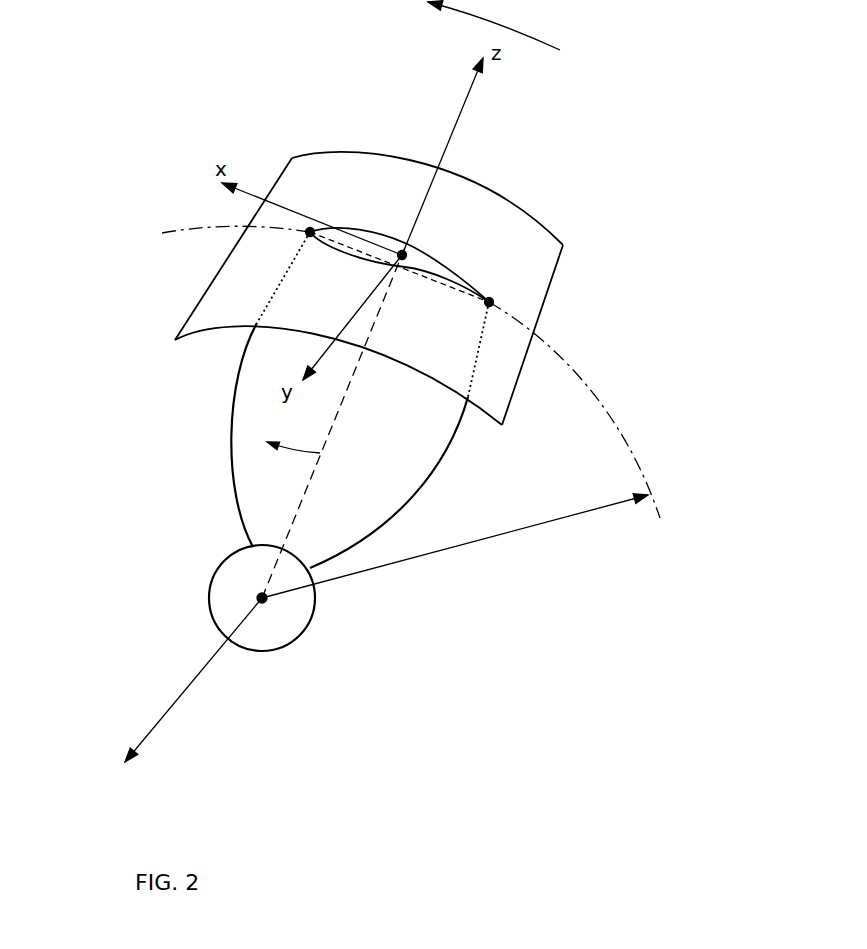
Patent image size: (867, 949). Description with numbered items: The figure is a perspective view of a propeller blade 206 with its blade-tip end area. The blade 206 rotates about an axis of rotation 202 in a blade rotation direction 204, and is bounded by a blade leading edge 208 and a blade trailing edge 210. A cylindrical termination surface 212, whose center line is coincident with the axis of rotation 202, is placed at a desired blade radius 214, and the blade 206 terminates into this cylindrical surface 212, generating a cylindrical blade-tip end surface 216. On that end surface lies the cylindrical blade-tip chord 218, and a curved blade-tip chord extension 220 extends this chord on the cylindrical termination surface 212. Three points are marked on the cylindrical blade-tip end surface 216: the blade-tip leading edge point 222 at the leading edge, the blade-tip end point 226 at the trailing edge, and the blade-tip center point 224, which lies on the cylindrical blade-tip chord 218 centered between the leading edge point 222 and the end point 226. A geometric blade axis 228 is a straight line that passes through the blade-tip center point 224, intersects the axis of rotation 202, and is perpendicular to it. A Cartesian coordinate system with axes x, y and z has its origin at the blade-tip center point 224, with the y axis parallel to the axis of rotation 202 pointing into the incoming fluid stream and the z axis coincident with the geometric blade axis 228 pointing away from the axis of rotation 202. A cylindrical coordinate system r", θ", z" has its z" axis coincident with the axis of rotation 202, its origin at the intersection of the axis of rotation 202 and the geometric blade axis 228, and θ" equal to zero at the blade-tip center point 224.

The axis of rotation 202 is at (192, 660).
The blade rotation direction 204 is at (494, 25).
The blade 206 is at (315, 400).
The blade leading edge 208 is at (240, 350).
The blade trailing edge 210 is at (455, 438).
The cylindrical termination surface 212 is at (352, 162).
The desired blade radius 214 is at (455, 543).
The cylindrical blade-tip end surface 216 is at (370, 231).
The cylindrical blade-tip chord 218 is at (428, 252).
The curved blade-tip chord extension 220 is at (195, 223).
The blade-tip leading edge point 222 is at (305, 233).
The blade-tip center point 224 is at (401, 252).
The blade-tip end point 226 is at (492, 302).
The geometric blade axis 228 is at (317, 463).